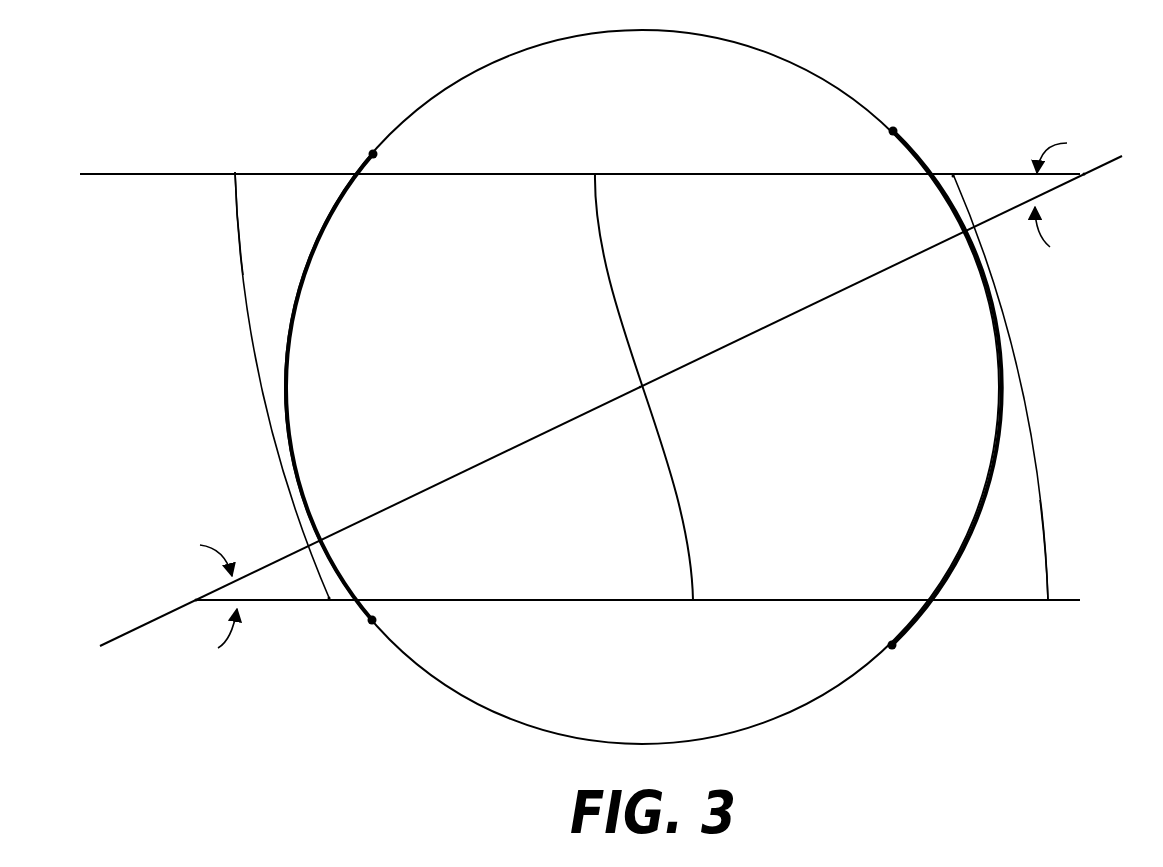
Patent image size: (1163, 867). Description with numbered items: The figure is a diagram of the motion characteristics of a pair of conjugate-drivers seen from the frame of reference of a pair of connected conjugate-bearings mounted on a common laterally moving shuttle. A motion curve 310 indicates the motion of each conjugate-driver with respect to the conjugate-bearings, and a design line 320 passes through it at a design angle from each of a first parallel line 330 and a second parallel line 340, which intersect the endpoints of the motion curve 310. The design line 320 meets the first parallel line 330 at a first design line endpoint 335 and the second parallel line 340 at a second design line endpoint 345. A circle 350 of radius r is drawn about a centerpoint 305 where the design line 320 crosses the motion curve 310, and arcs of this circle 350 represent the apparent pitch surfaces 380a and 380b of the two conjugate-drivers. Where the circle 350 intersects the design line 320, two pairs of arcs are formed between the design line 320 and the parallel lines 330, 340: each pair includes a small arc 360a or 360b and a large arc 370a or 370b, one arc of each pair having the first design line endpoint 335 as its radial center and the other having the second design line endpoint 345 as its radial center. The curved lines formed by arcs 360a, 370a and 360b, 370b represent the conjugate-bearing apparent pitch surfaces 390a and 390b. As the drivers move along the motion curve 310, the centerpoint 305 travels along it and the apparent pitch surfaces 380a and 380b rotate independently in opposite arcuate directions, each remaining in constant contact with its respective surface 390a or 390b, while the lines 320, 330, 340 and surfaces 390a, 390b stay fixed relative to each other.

The centerpoint 305 is at (640, 387).
The motion curve 310 is at (670, 455).
The design line 320 is at (470, 468).
The first parallel line 330 is at (627, 600).
The first design line endpoint 335 is at (194, 600).
The second parallel line 340 is at (500, 174).
The second design line endpoint 345 is at (1084, 174).
The circle 350 is at (767, 52).
The small arc 360a is at (953, 180).
The small arc 360b is at (328, 600).
The large arc 370a is at (1048, 567).
The large arc 370b is at (238, 227).
The apparent pitch surface 380a is at (993, 457).
The apparent pitch surface 380b is at (290, 348).
The conjugate-bearing apparent pitch surface 390a is at (1015, 362).
The conjugate-bearing apparent pitch surface 390b is at (262, 400).